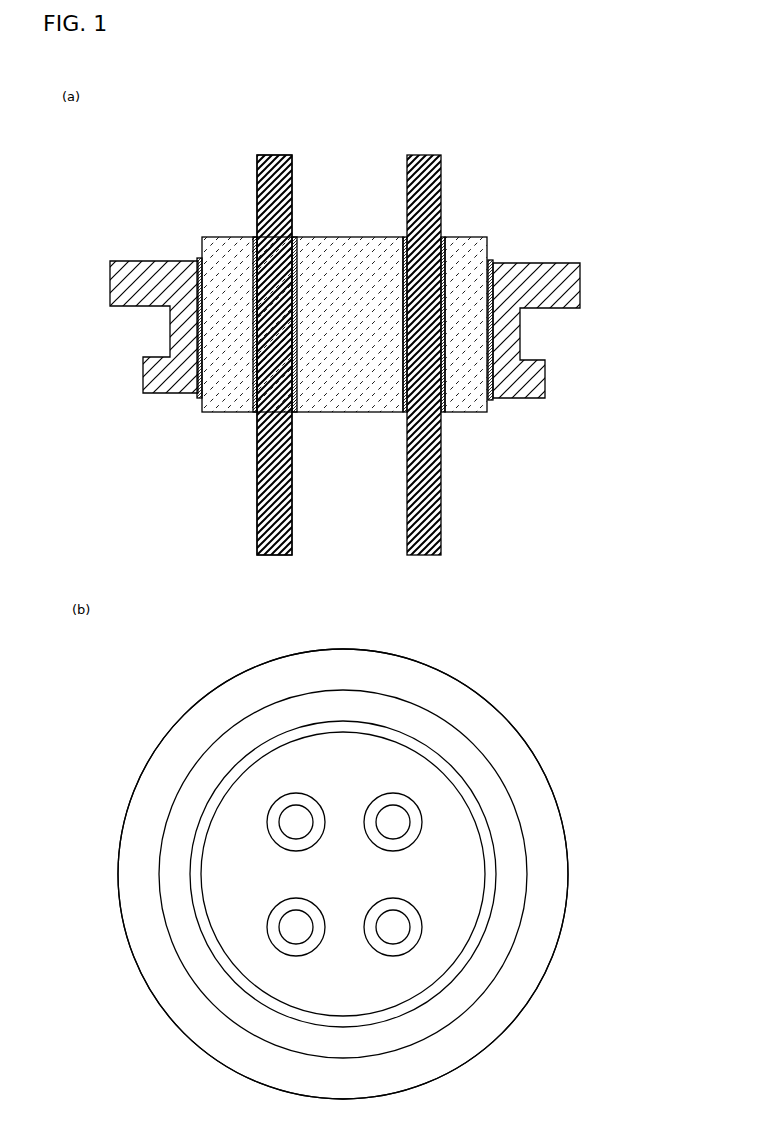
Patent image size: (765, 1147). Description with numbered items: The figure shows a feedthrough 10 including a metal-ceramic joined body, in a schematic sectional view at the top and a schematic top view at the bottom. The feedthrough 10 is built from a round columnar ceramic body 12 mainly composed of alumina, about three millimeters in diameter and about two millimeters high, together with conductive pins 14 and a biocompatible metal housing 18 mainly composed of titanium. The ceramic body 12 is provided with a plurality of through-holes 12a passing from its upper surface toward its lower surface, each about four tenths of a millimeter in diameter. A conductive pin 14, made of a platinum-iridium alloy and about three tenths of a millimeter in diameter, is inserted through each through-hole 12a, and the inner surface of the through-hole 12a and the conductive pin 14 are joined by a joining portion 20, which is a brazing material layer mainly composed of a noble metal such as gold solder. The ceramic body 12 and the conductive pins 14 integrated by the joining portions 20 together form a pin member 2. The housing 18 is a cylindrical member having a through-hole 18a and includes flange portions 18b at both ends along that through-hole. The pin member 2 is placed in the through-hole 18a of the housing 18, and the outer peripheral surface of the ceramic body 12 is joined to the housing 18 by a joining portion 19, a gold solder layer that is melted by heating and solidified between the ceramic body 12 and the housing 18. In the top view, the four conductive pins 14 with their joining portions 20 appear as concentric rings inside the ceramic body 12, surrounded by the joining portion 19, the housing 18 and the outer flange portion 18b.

The pin member 2 is at (357, 144).
The feedthrough 10 is at (509, 134).
The ceramic body 12 is at (383, 270).
The through-hole 12a is at (266, 266).
The conductive pin 14 is at (293, 196).
The housing 18 is at (517, 331).
The through-hole of housing 18a is at (461, 288).
The flange portion 18b is at (571, 269).
The joining portion 19 is at (197, 386).
The joining portion 20 is at (296, 247).